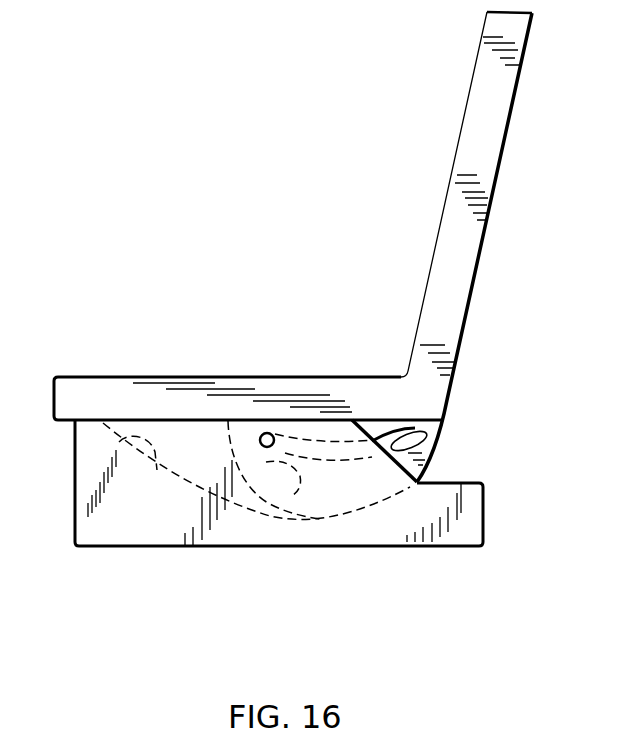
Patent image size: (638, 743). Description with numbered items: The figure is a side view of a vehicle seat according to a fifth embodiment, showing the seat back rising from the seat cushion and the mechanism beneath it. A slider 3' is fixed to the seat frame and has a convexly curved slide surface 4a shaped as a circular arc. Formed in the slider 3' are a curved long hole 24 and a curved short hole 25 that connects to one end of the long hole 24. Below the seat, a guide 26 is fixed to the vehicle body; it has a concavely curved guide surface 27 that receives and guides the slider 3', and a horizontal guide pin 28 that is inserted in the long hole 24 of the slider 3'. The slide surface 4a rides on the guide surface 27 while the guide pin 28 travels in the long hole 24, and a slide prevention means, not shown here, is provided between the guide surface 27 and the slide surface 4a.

The guide pin 28 is at (262, 435).
The curved long hole 24 is at (430, 433).
The guide surface 27 is at (157, 472).
The slide surface 4a is at (262, 503).
The curved short hole 25 is at (290, 497).
The slider 3' is at (256, 531).
The guide 26 is at (382, 528).